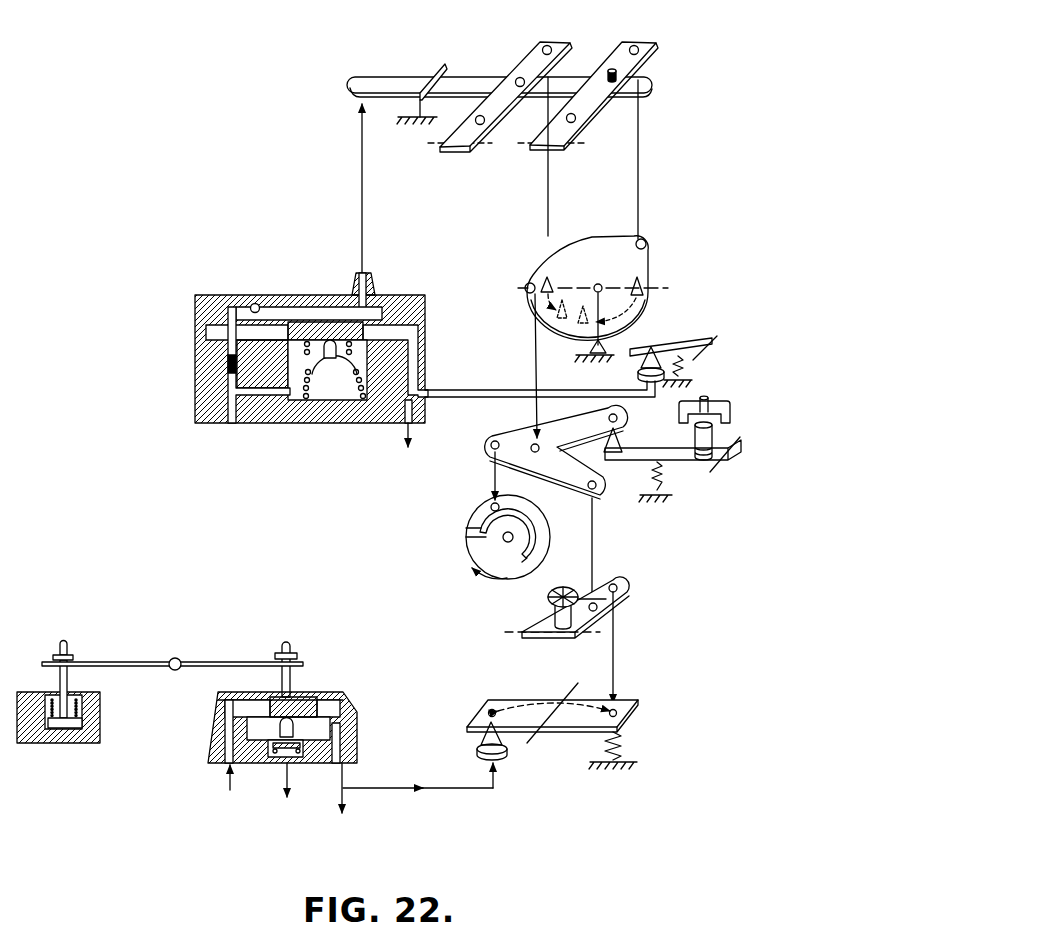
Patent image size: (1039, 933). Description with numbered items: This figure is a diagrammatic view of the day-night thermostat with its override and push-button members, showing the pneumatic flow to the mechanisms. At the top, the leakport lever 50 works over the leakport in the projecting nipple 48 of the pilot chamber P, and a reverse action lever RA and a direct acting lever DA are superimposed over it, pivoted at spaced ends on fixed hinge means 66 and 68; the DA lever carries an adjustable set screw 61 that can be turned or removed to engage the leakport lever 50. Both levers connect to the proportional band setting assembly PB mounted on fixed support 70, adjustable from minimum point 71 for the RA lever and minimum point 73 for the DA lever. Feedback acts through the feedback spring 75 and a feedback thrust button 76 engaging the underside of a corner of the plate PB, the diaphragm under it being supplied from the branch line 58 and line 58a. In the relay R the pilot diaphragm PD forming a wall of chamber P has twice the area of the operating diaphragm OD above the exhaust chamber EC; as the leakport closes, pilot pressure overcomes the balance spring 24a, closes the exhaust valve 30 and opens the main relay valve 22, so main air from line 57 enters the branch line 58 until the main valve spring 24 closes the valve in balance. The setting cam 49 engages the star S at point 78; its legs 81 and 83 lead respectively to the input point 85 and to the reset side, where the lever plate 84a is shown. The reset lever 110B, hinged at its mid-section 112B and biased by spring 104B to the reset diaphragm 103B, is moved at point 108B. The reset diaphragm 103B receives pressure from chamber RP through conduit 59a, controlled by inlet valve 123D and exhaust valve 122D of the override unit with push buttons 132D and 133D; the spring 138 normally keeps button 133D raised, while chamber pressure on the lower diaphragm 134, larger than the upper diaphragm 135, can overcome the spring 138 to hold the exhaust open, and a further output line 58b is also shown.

The leakport lever 50 is at (398, 76).
The reverse action lever RA is at (518, 60).
The direct acting lever DA is at (655, 48).
The adjustable set screw 61 is at (609, 67).
The fixed hinge means 66 is at (470, 152).
The fixed hinge means 68 is at (563, 148).
The proportional band setting assembly PB is at (582, 253).
The minimum point 71 is at (544, 279).
The minimum point 73 is at (639, 279).
The fixed support 70 is at (586, 350).
The feedback spring 75 is at (665, 343).
The feedback thrust button 76 is at (652, 346).
The pneumatic relay R is at (333, 352).
The pilot chamber P is at (318, 317).
The pilot diaphragm PD is at (280, 318).
The operating diaphragm OD is at (357, 330).
The projecting nipple 48 is at (376, 283).
The exhaust chamber EC is at (428, 299).
The branch air line 58 is at (427, 366).
The branch line 58a is at (461, 400).
The main air line 57 is at (230, 423).
The balance spring 24a is at (277, 396).
The main relay valve 22 is at (298, 424).
The main valve spring 24 is at (333, 424).
The exhaust valve 30 is at (340, 356).
The star S is at (556, 475).
The leg 81 is at (575, 428).
The leg 83 is at (565, 475).
The temperature or humidity input point 85 is at (620, 418).
The setting cam 49 is at (472, 547).
The cam engagement point 78 is at (490, 506).
The lever plate 84a is at (603, 609).
The connection point 108B is at (639, 712).
The reset lever 110B is at (482, 706).
The hinge 112B is at (548, 724).
The spring 104B is at (624, 748).
The reset diaphragm 103B is at (500, 765).
The conduit 59a is at (440, 790).
The spring 138 is at (50, 712).
The night button 133D is at (66, 645).
The manual push button 132D is at (290, 642).
The lower diaphragm 134 is at (280, 740).
The chamber RP is at (347, 717).
The exhaust valve 122D is at (265, 760).
The output line 58b is at (343, 790).
The inlet valve 123D is at (298, 697).
The upper diaphragm 135 is at (265, 693).